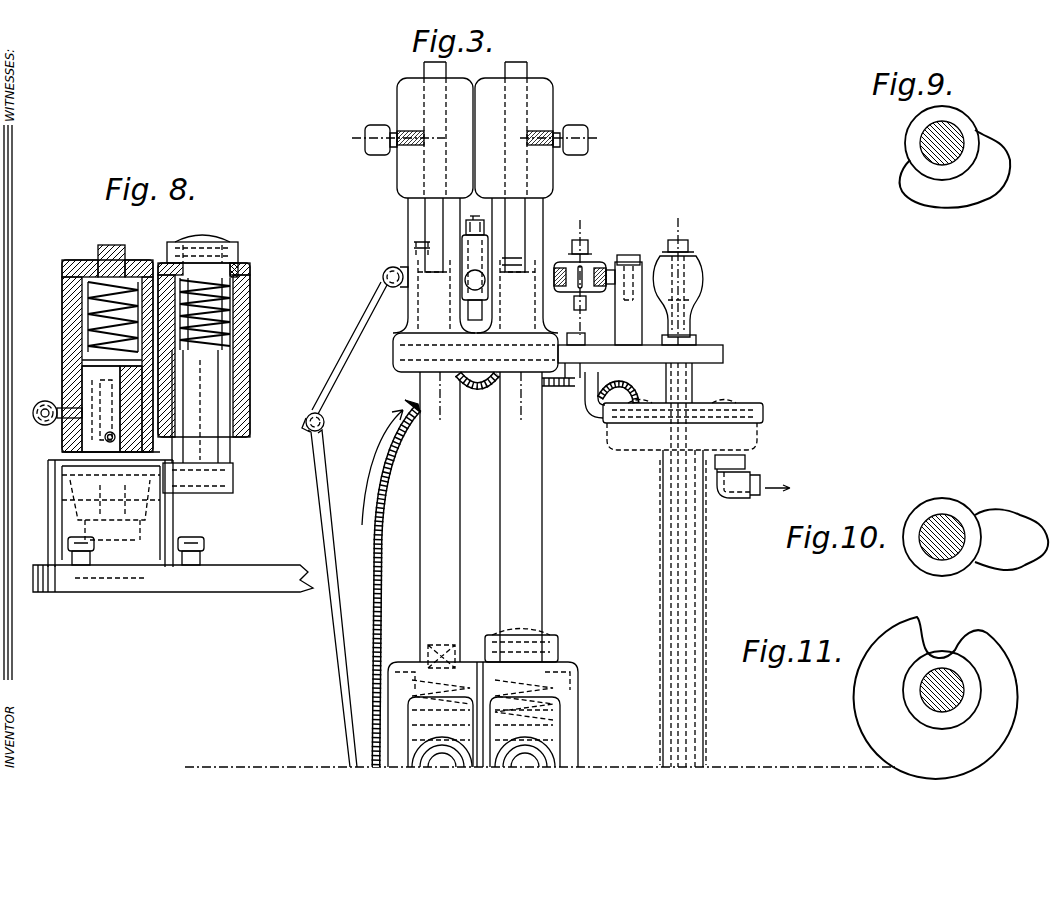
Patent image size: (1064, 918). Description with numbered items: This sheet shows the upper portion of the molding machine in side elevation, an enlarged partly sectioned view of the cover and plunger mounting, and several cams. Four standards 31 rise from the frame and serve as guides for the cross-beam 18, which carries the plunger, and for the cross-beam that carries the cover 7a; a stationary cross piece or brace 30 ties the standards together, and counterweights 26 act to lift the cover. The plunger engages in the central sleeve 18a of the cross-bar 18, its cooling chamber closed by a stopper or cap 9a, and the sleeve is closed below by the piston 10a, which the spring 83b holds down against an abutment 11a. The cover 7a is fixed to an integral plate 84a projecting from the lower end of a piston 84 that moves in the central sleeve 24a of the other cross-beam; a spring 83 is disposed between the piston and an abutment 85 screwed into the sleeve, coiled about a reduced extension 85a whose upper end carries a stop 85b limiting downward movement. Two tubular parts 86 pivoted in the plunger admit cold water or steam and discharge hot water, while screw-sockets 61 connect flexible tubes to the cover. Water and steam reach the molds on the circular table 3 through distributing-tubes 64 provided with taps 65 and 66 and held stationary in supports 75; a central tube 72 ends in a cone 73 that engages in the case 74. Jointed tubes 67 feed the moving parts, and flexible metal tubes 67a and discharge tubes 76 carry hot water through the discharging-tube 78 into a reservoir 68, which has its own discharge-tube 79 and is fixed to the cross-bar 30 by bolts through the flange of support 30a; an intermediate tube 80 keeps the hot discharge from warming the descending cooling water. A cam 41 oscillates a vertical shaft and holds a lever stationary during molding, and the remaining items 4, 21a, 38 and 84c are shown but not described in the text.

In FIG. 8, the circular table 3 is at (218, 580).
In FIG. 8, the fastening bolts 4 is at (68, 546).
In FIG. 8, the cover 7a is at (173, 515).
In FIG. 8, the stopper or cap 9a is at (57, 408).
In FIG. 8, the piston 10a is at (92, 380).
In FIG. 8, the abutment 11a is at (50, 362).
In FIG. 3, the abutment 11a is at (578, 668).
In FIG. 3, the cross-beam 18 is at (340, 742).
In FIG. 8, the central sleeve 18a is at (62, 325).
In FIG. 3, the valve seat 21a is at (445, 660).
In FIG. 8, the central sleeve 24a is at (250, 378).
In FIG. 3, the central sleeve 24a is at (578, 722).
In FIG. 3, the counterweights 26 is at (397, 185).
In FIG. 3, the stationary cross piece or brace 30 is at (558, 352).
In FIG. 3, the support 30a is at (604, 420).
In FIG. 3, the standards 31 is at (497, 517).
In FIG. 9, the cam 38 is at (955, 157).
In FIG. 10, the cam 38 is at (988, 522).
In FIG. 11, the cam 41 is at (880, 722).
In FIG. 3, the screw-sockets 61 is at (469, 217).
In FIG. 3, the distributing-tubes 64 is at (570, 262).
In FIG. 3, the tap 65 is at (393, 267).
In FIG. 3, the tap 66 is at (594, 262).
In FIG. 3, the jointed tubes 67 is at (356, 350).
In FIG. 3, the flexible metal tubes 67a is at (374, 546).
In FIG. 3, the reservoir 68 is at (632, 410).
In FIG. 3, the central tube 72 is at (703, 694).
In FIG. 3, the cone 73 is at (673, 275).
In FIG. 3, the case 74 is at (698, 262).
In FIG. 3, the supports 75 is at (628, 262).
In FIG. 3, the discharge tubes 76 is at (484, 262).
In FIG. 3, the discharging-tube 78 is at (703, 752).
In FIG. 3, the discharge-tube 79 is at (752, 481).
In FIG. 3, the intermediate tube 80 is at (692, 382).
In FIG. 8, the spring 83 is at (250, 303).
In FIG. 3, the spring 83 is at (588, 690).
In FIG. 8, the spring 83b is at (88, 296).
In FIG. 8, the piston 84 is at (230, 452).
In FIG. 8, the integral plate 84a is at (62, 480).
In FIG. 8, the rod flange 84c is at (198, 478).
In FIG. 8, the abutment 85 is at (238, 255).
In FIG. 3, the abutment 85 is at (553, 642).
In FIG. 8, the reduced extension 85a is at (250, 270).
In FIG. 8, the stop 85b is at (230, 243).
In FIG. 8, the tubular parts 86 is at (45, 425).